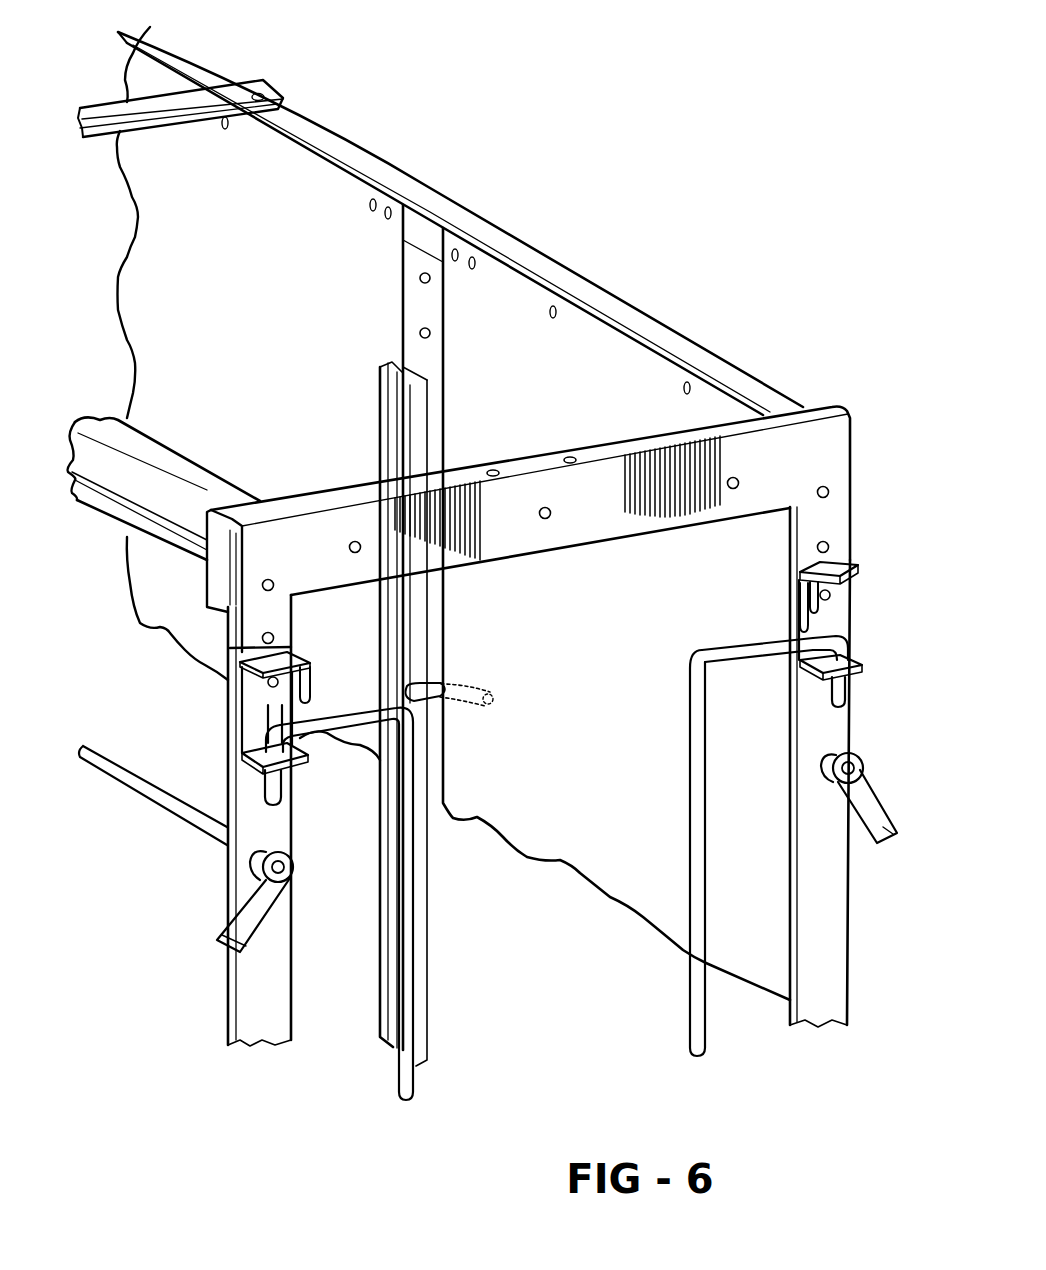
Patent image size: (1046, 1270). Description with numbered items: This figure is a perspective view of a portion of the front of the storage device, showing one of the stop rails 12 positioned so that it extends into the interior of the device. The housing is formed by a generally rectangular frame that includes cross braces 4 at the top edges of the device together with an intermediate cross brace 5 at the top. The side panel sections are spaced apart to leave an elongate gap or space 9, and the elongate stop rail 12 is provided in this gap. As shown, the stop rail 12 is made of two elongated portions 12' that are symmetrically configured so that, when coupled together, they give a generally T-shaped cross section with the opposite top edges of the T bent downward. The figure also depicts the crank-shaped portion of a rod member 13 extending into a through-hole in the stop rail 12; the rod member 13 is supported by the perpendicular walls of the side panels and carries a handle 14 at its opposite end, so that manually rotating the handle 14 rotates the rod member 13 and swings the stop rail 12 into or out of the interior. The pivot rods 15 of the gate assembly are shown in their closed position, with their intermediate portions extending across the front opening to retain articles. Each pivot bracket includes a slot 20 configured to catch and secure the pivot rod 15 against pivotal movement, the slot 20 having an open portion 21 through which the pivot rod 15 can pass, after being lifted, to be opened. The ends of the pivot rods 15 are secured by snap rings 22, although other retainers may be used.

The cross brace 4 is at (840, 442).
The intermediate cross brace 5 is at (258, 78).
The gap or space 9 is at (427, 850).
The stop rail 12 is at (335, 705).
The elongated portion 12' is at (422, 635).
The rod member 13 is at (430, 690).
The handle 14 is at (217, 930).
The pivot rod 15 is at (410, 940).
The slot 20 is at (300, 695).
The open portion 21 is at (300, 716).
The snap ring 22 is at (277, 790).